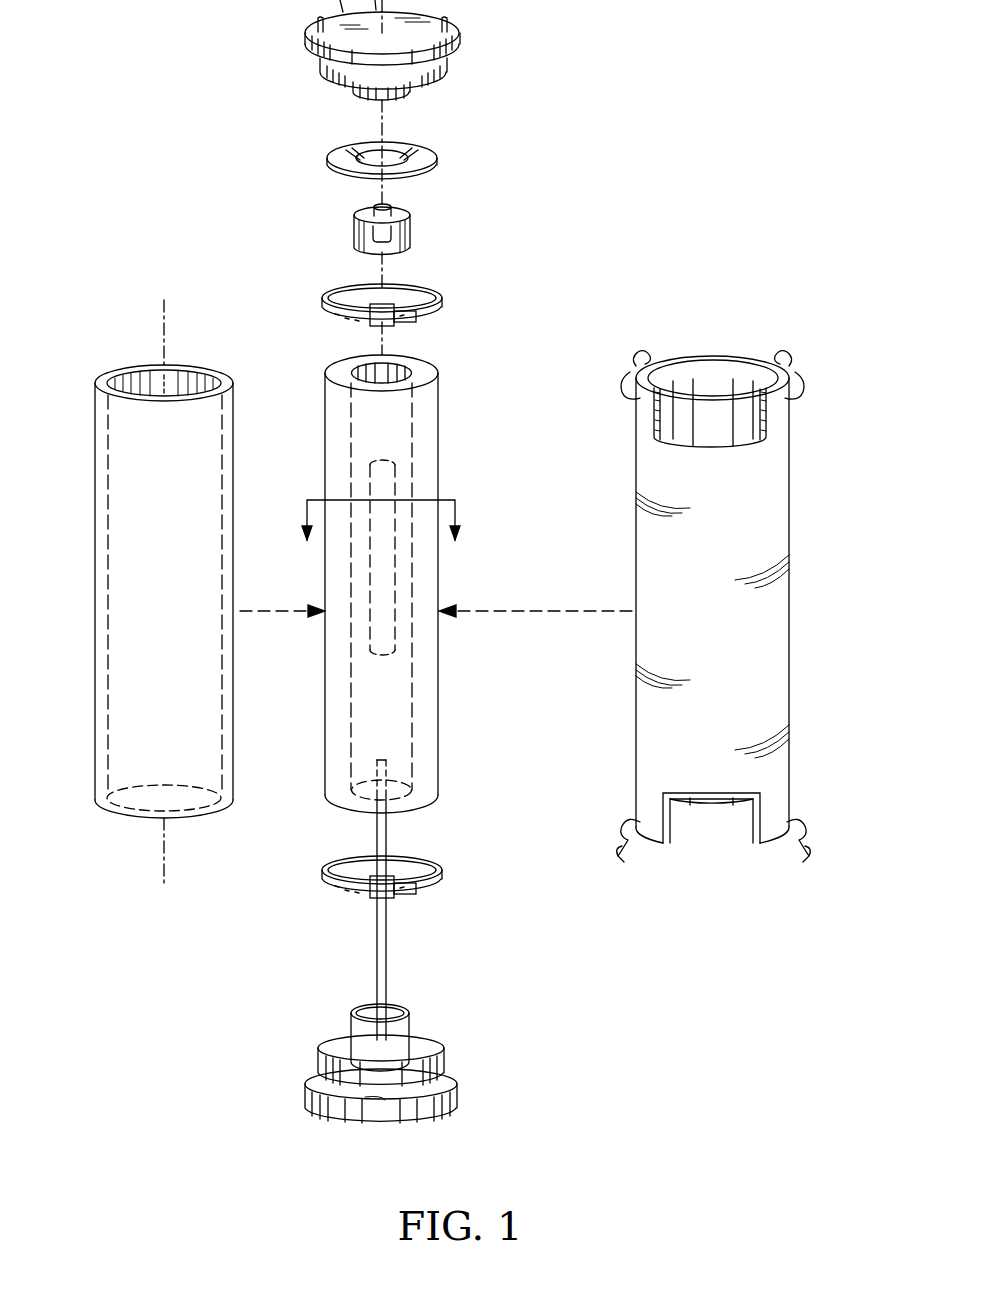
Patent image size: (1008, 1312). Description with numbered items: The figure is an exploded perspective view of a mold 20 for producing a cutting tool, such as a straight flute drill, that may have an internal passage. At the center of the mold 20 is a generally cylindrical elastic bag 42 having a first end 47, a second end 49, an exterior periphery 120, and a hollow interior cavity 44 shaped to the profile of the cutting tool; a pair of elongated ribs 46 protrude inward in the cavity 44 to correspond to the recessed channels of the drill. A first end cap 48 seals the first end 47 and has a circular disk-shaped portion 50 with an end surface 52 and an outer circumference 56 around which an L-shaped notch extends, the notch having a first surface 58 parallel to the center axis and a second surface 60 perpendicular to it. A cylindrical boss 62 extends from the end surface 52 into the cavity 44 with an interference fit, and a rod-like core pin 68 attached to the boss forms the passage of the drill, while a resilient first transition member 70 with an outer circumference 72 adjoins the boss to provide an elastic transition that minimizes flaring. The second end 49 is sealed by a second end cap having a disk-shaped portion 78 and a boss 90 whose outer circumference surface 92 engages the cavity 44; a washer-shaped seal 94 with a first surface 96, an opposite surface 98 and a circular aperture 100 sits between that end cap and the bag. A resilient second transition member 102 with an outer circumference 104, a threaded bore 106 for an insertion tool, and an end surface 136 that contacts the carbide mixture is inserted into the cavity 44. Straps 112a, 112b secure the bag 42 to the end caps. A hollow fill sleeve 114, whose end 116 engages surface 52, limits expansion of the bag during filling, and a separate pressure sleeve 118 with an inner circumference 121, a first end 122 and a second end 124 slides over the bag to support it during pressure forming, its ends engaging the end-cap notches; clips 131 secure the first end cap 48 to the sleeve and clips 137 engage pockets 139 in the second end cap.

The mold 20 is at (642, 201).
The bag 42 is at (385, 591).
The interior cavity 44 is at (392, 708).
The elongated ribs 46 is at (395, 651).
The first end of bag 47 is at (415, 805).
The first end cap 48 is at (389, 1078).
The second end of bag 49 is at (428, 366).
The disk-shaped portion 50 is at (458, 1092).
The end surface 52 is at (397, 1036).
The outer circumference 56 is at (305, 1095).
The first notch surface 58 is at (445, 1060).
The second notch surface 60 is at (379, 1125).
The boss 62 is at (352, 1040).
The core pin 68 is at (388, 958).
The first transition member 70 is at (412, 1024).
The outer circumference of first transition member 72 is at (350, 1024).
The disk-shaped portion of second end cap 78 is at (460, 44).
The boss of second end cap 90 is at (384, 60).
The outer circumference surface of boss 92 is at (414, 88).
The washer-shaped seal 94 is at (400, 151).
The first surface of seal 96 is at (340, 152).
The opposite surface of seal 98 is at (345, 170).
The circular aperture 100 is at (402, 150).
The second transition member 102 is at (380, 243).
The outer circumference of second transition member 104 is at (350, 240).
The threaded bore 106 is at (412, 224).
The first strap 112a is at (443, 873).
The second strap 112b is at (443, 301).
The fill sleeve 114 is at (133, 591).
The end of fill sleeve 116 is at (122, 818).
The pressure sleeve 118 is at (714, 600).
The exterior periphery of bag 120 is at (325, 440).
The inner circumference of pressure sleeve 121 is at (745, 418).
The first end of pressure sleeve 122 is at (772, 848).
The second end of pressure sleeve 124 is at (713, 358).
The clips 131 is at (625, 820).
The end surface of second transition member 136 is at (405, 248).
The clips 137 is at (626, 350).
The pockets 139 is at (316, 20).